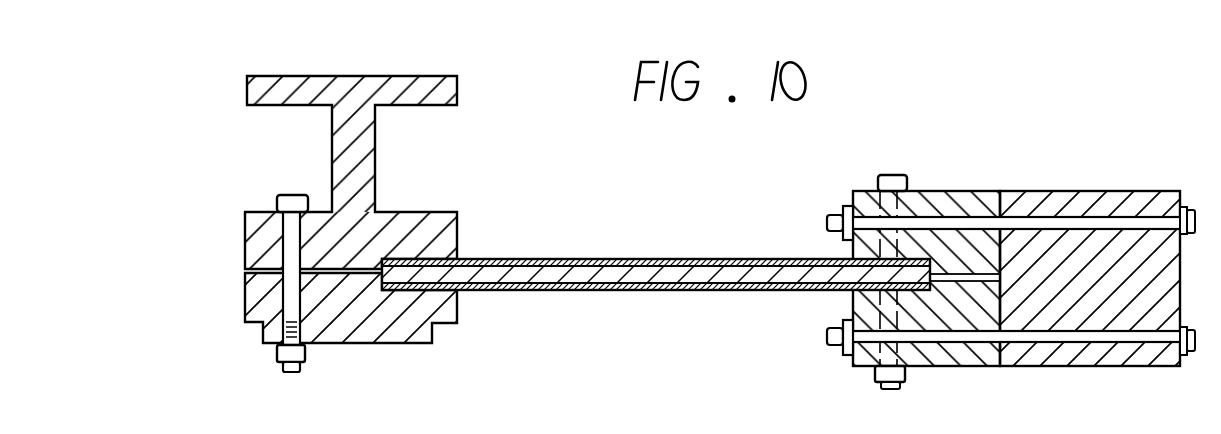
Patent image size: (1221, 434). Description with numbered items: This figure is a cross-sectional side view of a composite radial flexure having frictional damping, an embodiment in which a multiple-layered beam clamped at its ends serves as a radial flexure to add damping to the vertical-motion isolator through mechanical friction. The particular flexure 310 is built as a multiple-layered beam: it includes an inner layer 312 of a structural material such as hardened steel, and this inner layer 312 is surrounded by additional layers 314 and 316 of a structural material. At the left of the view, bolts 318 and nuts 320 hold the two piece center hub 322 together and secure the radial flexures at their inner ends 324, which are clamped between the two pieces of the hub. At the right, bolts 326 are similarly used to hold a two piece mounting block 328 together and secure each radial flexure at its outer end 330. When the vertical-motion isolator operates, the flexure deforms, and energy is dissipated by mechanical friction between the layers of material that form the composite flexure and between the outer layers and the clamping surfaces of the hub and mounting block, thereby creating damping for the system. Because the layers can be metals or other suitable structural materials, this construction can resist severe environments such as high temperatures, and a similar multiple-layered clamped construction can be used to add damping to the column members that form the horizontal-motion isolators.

The flexure 310 is at (645, 259).
The inner layer 312 is at (562, 261).
The additional layer 314 is at (742, 292).
The additional layer 316 is at (730, 259).
The bolts 318 is at (291, 194).
The nuts 320 is at (305, 351).
The two piece center hub 322 is at (429, 218).
The inner ends 324 is at (413, 290).
The bolts 326 is at (905, 178).
The two piece mounting block 328 is at (975, 194).
The outer end 330 is at (848, 210).